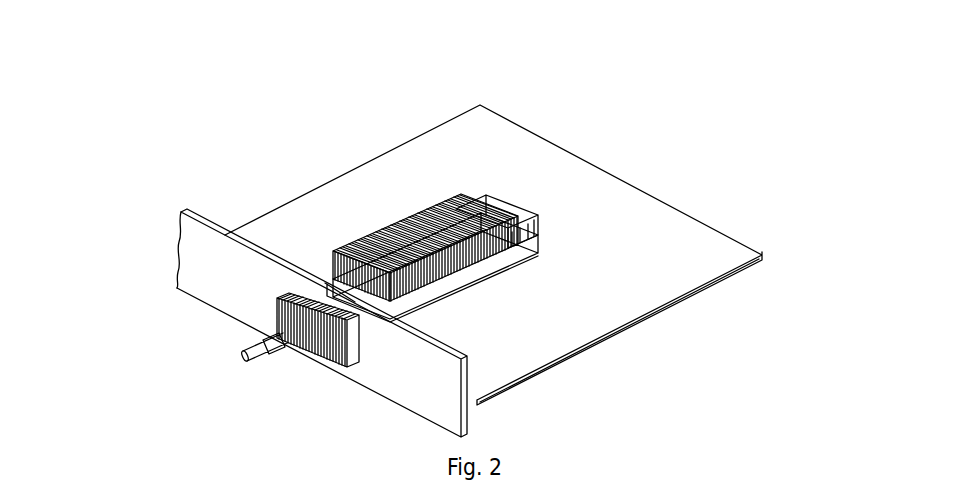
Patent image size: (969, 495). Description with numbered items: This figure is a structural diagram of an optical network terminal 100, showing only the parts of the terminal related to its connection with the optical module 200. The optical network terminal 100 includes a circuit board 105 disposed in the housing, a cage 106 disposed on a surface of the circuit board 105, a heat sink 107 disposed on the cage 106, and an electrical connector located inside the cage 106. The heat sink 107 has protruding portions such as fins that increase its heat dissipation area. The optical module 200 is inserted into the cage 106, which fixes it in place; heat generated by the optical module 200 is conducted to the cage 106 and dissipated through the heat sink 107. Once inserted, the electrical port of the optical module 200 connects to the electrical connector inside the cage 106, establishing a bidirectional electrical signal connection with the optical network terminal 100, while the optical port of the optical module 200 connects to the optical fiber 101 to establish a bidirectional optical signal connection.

The optical network terminal 100 is at (297, 172).
The optical fiber 101 is at (270, 345).
The circuit board 105 is at (520, 360).
The cage 106 is at (483, 267).
The heat sink 107 is at (408, 226).
The optical module 200 is at (345, 343).